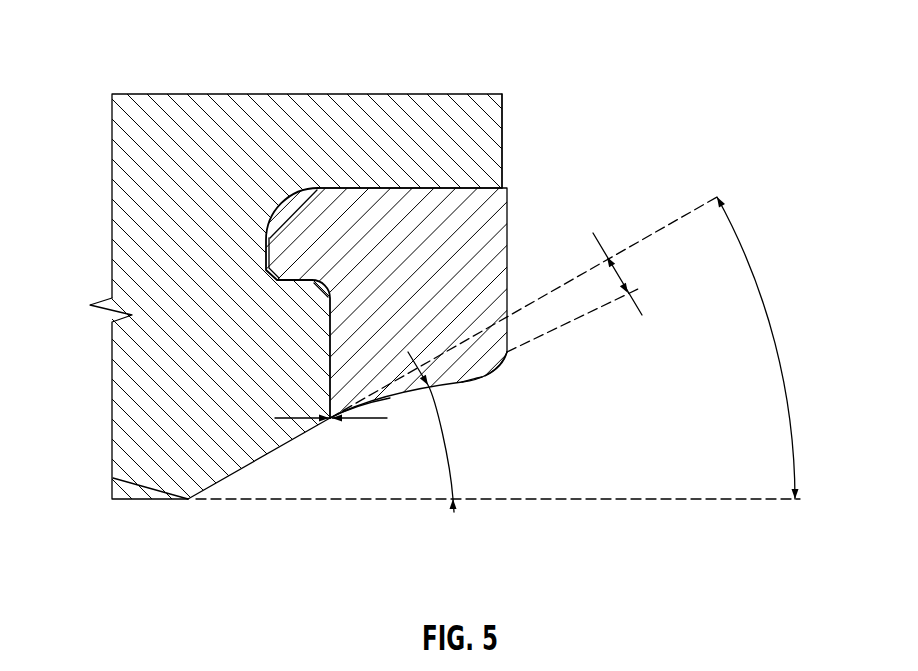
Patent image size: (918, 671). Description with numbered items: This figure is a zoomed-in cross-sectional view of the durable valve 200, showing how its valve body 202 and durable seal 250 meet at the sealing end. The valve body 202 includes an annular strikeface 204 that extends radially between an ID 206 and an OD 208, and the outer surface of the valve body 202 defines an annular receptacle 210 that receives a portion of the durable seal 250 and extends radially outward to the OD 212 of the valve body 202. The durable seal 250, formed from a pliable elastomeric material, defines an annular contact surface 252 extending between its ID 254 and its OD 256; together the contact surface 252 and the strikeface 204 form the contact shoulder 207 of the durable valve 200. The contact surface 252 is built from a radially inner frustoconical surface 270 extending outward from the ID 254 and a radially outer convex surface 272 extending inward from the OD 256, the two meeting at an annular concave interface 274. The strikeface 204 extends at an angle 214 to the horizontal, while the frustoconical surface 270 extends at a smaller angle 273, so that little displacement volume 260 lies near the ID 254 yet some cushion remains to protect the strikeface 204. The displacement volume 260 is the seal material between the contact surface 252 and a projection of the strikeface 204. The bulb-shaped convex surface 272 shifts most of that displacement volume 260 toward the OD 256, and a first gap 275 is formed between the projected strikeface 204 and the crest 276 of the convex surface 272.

The durable valve 200 is at (127, 31).
The valve body 202 is at (135, 183).
The annular strikeface 204 is at (250, 462).
The ID 206 is at (188, 505).
The contact shoulder 207 is at (273, 463).
The OD 208 is at (305, 417).
The annular receptacle 210 is at (271, 205).
The OD 212 is at (505, 118).
The angle 214 is at (773, 332).
The durable seal 250 is at (392, 200).
The annular contact surface 252 is at (446, 386).
The ID 254 is at (340, 422).
The OD 256 is at (512, 353).
The displacement volume 260 is at (483, 316).
The radially inner frustoconical surface 270 is at (385, 392).
The radially outer convex surface 272 is at (480, 377).
The angle 273 is at (456, 513).
The concave interface 274 is at (446, 386).
The first gap 275 is at (623, 270).
The crest 276 is at (500, 362).